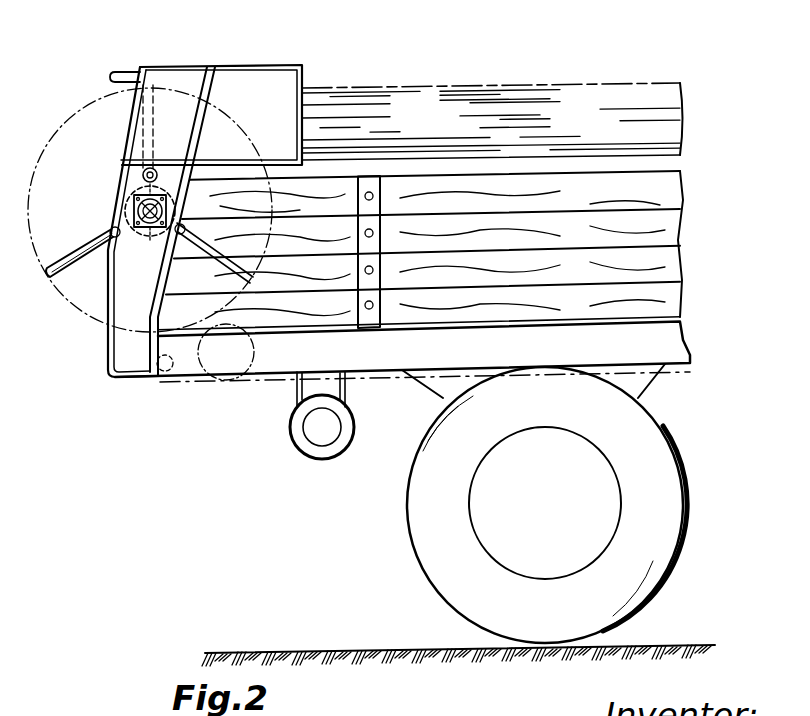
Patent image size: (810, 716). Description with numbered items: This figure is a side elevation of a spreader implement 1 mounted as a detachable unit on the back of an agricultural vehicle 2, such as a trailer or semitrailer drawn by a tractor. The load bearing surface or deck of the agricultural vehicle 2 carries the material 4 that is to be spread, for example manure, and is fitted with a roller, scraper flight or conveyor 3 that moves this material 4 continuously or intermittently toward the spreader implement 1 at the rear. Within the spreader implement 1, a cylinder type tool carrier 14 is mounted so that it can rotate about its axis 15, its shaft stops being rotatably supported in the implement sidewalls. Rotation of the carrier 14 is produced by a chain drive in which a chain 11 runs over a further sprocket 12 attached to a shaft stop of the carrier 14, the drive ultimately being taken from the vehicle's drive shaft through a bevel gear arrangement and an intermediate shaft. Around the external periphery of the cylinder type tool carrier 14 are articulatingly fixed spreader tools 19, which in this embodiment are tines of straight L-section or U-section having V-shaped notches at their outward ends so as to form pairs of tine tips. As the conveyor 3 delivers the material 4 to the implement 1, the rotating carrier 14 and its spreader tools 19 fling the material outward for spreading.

The spreader implement 1 is at (145, 373).
The agricultural vehicle 2 is at (438, 344).
The conveyor 3 is at (268, 327).
The material 4 is at (438, 100).
The chain 11 is at (90, 242).
The further sprocket 12 is at (125, 75).
The cylinder type tool carrier 14 is at (161, 178).
The axis 15 is at (138, 204).
The spreader tools 19 is at (72, 268).